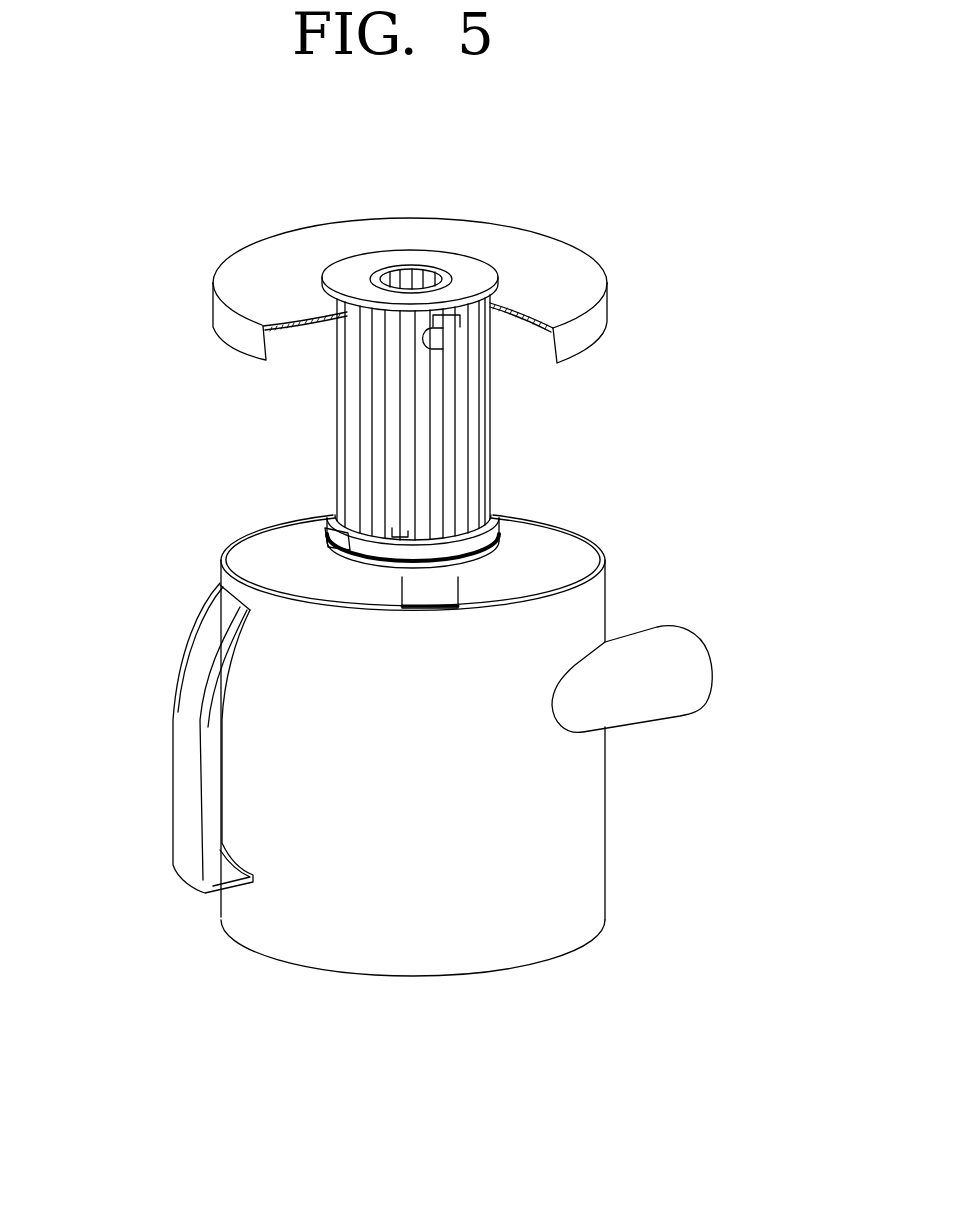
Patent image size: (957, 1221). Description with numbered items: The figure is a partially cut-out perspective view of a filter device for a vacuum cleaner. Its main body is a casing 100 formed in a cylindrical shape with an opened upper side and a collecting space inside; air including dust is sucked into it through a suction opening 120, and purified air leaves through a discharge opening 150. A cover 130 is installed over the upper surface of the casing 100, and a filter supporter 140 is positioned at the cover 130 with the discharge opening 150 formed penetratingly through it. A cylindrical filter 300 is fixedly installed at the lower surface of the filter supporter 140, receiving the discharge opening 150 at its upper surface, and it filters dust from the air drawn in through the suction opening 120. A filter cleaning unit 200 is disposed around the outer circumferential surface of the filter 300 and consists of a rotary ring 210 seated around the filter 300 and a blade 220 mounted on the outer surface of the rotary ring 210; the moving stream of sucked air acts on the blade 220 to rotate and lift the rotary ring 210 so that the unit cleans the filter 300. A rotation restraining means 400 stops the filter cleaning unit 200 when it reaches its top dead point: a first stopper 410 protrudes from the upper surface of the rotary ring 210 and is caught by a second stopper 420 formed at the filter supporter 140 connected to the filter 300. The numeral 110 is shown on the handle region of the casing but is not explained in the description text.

The casing 100 is at (212, 548).
The handle 110 is at (192, 685).
The suction opening 120 is at (690, 673).
The cover 130 is at (270, 250).
The filter supporter 140 is at (473, 272).
The discharge opening 150 is at (400, 276).
The filter cleaning unit 200 is at (515, 523).
The rotary ring 210 is at (475, 540).
The blade 220 is at (323, 533).
The filter 300 is at (356, 422).
The rotation restraining means 400 is at (608, 392).
The first stopper 410 is at (402, 532).
The second stopper 420 is at (428, 335).